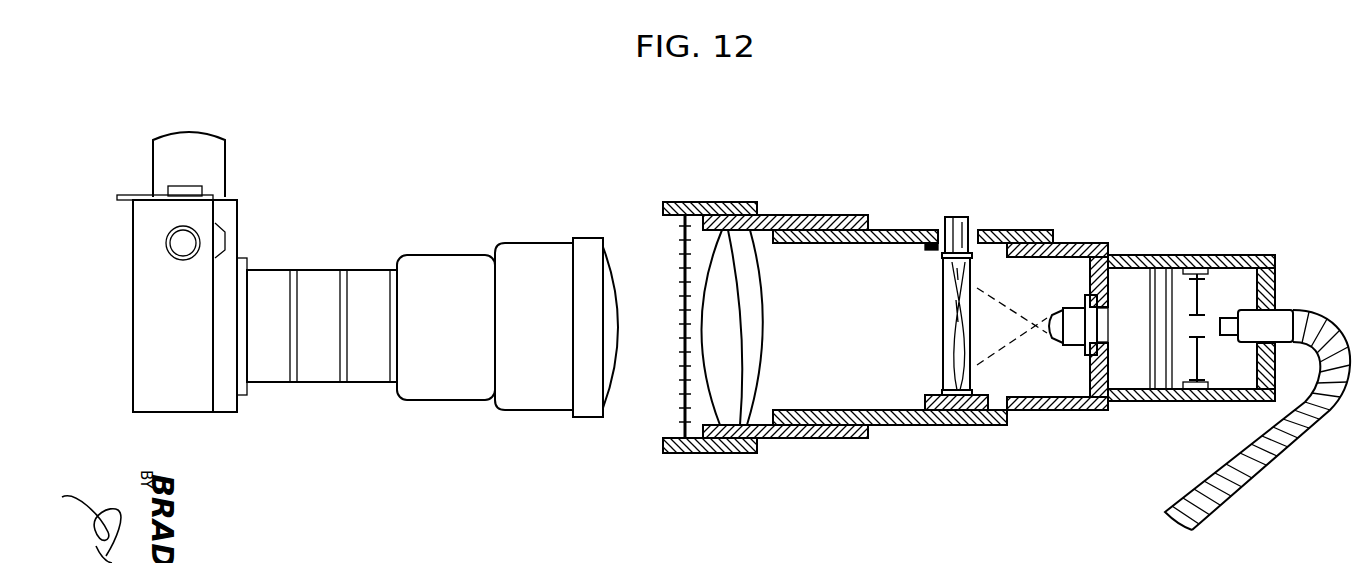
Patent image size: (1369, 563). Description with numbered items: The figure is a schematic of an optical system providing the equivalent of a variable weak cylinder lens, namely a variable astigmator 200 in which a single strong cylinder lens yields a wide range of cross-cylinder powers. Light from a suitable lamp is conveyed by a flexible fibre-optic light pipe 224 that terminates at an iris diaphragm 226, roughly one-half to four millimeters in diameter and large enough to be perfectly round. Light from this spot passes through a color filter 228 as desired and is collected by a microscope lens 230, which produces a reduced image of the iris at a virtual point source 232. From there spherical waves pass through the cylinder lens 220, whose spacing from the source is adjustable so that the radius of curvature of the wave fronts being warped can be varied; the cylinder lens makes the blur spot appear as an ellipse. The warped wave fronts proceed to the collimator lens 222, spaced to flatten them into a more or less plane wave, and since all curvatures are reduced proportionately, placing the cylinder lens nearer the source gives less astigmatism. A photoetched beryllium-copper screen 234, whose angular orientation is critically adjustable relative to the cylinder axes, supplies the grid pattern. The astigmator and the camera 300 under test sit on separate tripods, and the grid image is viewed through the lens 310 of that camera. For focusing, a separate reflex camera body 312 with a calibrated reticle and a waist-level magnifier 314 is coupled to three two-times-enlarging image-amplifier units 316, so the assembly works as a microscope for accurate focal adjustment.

The variable astigmator 200 is at (1013, 163).
The cylinder lens 220 is at (945, 263).
The collimator lens 222 is at (758, 385).
The flexible fibre-optic light pipe 224 is at (1237, 490).
The iris diaphragm 226 is at (1207, 293).
The color filter 228 is at (1150, 374).
The microscope lens 230 is at (1063, 308).
The virtual point source 232 is at (1033, 333).
The screen 234 is at (677, 418).
The camera 300 is at (437, 255).
The lens 310 is at (545, 243).
The reflex camera body 312 is at (237, 198).
The waist-level magnifier 314 is at (150, 150).
The image-amplifier units 316 is at (272, 393).